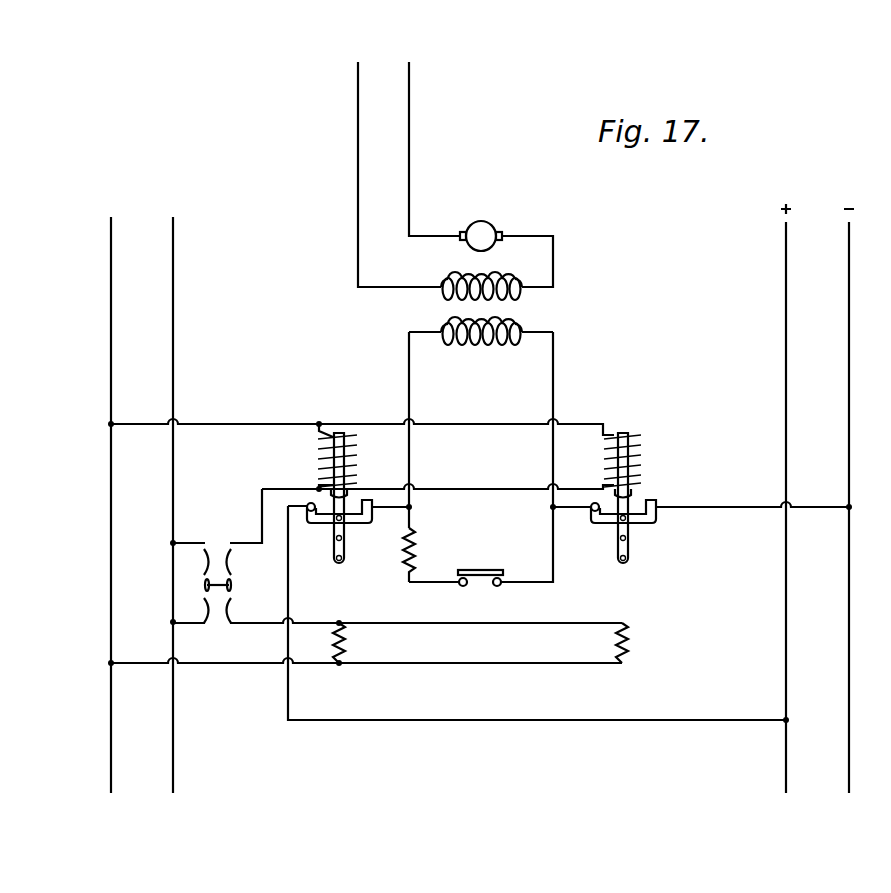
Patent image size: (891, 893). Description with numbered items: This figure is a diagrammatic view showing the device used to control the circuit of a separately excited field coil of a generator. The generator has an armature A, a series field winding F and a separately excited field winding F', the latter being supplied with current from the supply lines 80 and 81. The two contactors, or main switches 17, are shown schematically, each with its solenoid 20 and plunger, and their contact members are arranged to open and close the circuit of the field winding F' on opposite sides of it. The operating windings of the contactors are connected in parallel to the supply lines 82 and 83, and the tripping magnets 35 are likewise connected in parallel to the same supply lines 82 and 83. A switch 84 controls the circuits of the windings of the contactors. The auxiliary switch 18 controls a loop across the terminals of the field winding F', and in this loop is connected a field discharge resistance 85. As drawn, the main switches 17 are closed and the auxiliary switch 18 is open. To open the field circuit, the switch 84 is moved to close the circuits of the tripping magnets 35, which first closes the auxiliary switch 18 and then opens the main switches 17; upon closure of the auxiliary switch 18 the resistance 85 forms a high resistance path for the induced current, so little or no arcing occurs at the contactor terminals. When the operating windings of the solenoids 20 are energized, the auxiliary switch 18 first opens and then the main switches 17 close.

The supply line 83 is at (112, 348).
The supply line 82 is at (175, 348).
The supply line 80 is at (786, 762).
The supply line 81 is at (858, 763).
The armature A is at (481, 221).
The series field winding F is at (530, 298).
The solenoid 20 is at (612, 433).
The main switch 17 is at (640, 468).
The field discharge resistance 85 is at (416, 548).
The auxiliary switch 18 is at (487, 570).
The switch 84 is at (232, 585).
The tripping magnet 35 is at (640, 646).